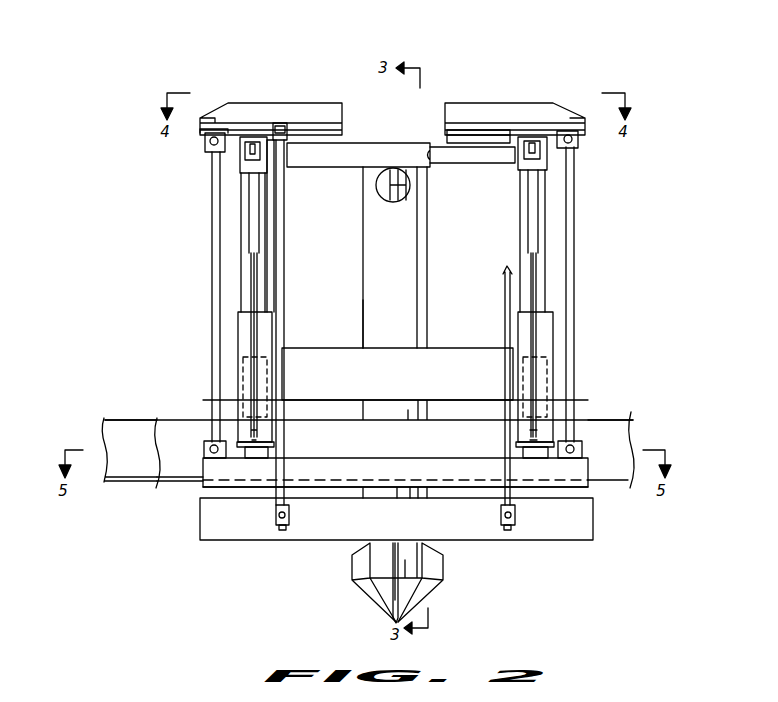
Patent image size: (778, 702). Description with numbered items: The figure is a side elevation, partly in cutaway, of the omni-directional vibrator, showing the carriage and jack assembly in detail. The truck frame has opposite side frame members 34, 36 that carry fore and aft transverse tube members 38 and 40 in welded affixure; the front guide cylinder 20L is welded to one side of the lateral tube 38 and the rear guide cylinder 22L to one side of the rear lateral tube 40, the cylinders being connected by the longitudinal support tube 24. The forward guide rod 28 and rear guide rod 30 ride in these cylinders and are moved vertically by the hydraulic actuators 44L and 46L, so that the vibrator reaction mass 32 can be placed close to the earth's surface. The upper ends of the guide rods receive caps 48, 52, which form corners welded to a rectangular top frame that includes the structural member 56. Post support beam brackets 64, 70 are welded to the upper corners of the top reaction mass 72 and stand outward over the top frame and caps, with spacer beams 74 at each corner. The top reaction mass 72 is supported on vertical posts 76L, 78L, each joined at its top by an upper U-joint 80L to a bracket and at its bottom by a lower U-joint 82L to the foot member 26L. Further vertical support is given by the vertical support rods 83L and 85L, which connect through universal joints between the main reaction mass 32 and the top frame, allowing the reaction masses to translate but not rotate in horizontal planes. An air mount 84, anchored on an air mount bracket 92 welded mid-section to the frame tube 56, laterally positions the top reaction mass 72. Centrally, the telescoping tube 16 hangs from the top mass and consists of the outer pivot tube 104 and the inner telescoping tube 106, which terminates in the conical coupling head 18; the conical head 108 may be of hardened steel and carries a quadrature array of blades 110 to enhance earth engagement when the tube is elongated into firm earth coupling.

The telescoping tube 16 is at (381, 257).
The coupling head 18 is at (418, 603).
The left front guide cylinder 20L is at (243, 323).
The left rear guide cylinder 22L is at (546, 340).
The longitudinal support tube 24 is at (397, 374).
The left foot member 26L is at (203, 470).
The front guide rod 28 is at (268, 217).
The rear guide rod 30 is at (522, 203).
The vibrator reaction mass 32 is at (396, 519).
The side frame member 34 is at (175, 432).
The side frame member 36 is at (122, 435).
The front transverse tube member 38 is at (240, 390).
The rear transverse tube member 40 is at (550, 380).
The left front hydraulic actuator 44L is at (252, 263).
The left rear hydraulic actuator 46L is at (534, 282).
The cap 48 is at (244, 164).
The cap 52 is at (548, 166).
The structural member 56 is at (347, 155).
The post support beam bracket 64 is at (268, 114).
The post support beam bracket 70 is at (530, 110).
The top reaction mass 72 is at (473, 150).
The spacer beam 74 is at (469, 138).
The left vertical post 76L is at (211, 213).
The left vertical post 78L is at (571, 227).
The upper U-joint 80L is at (203, 141).
The lower U-joint 82L is at (203, 452).
The vertical support rod 83L is at (285, 257).
The air mount 84 is at (419, 220).
The vertical support rod 85L is at (505, 295).
The air mount bracket 92 is at (383, 200).
The outer pivot tube 104 is at (387, 320).
The inner telescoping tube 106 is at (377, 555).
The conical head 108 is at (384, 593).
The blades 110 is at (436, 568).